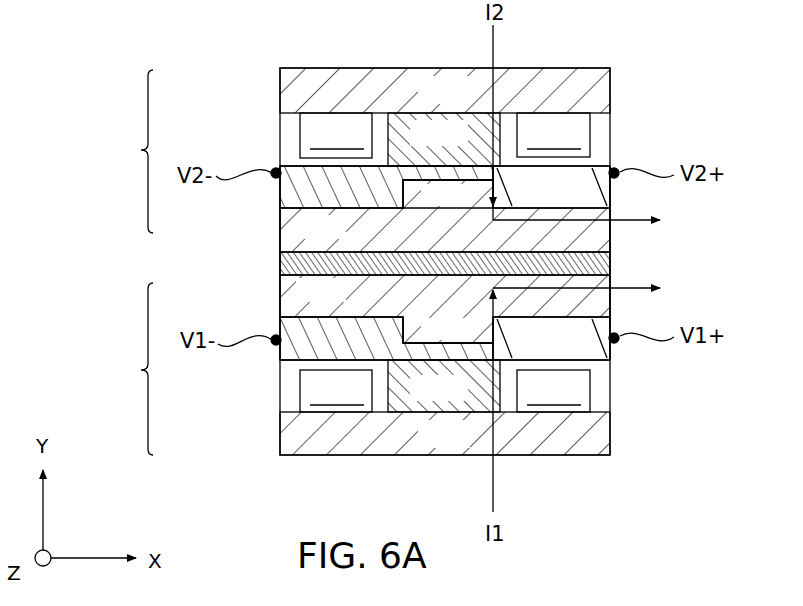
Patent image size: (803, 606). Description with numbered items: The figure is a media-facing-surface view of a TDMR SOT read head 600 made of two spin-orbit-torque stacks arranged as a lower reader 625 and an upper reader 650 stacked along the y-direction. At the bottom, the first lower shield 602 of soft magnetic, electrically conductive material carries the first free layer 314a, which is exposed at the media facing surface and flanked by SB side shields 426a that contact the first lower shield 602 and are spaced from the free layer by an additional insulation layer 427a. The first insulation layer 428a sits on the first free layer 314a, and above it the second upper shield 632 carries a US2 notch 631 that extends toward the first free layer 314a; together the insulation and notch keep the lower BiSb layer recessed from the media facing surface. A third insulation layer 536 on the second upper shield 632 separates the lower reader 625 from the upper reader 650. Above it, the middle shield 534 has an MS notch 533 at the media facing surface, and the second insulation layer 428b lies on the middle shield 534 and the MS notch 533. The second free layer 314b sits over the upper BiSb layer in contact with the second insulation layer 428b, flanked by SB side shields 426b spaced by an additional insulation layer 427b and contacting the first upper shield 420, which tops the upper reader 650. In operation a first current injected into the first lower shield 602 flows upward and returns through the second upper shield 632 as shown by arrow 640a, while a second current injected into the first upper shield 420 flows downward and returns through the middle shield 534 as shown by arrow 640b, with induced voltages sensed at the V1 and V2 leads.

The TDMR SOT read head 600 is at (168, 30).
The first upper shield 420 is at (462, 104).
The SB side shields 426b is at (445, 135).
The second free layer 314b is at (462, 146).
The additional insulation layer 427b is at (292, 160).
The upper reader 650 is at (119, 151).
The MS notch 533 is at (448, 194).
The second insulation layer 428b is at (585, 198).
The middle shield 534 is at (340, 243).
The third insulation layer 536 is at (611, 258).
The second upper shield 632 is at (340, 307).
The US2 notch 631 is at (448, 330).
The first insulation layer 428a is at (585, 352).
The lower reader 625 is at (119, 369).
The additional insulation layer 427a is at (292, 366).
The SB side shields 426a is at (445, 391).
The first free layer 314a is at (462, 401).
The first lower shield 602 is at (462, 448).
The arrow 640b is at (494, 40).
The arrow 640a is at (494, 500).